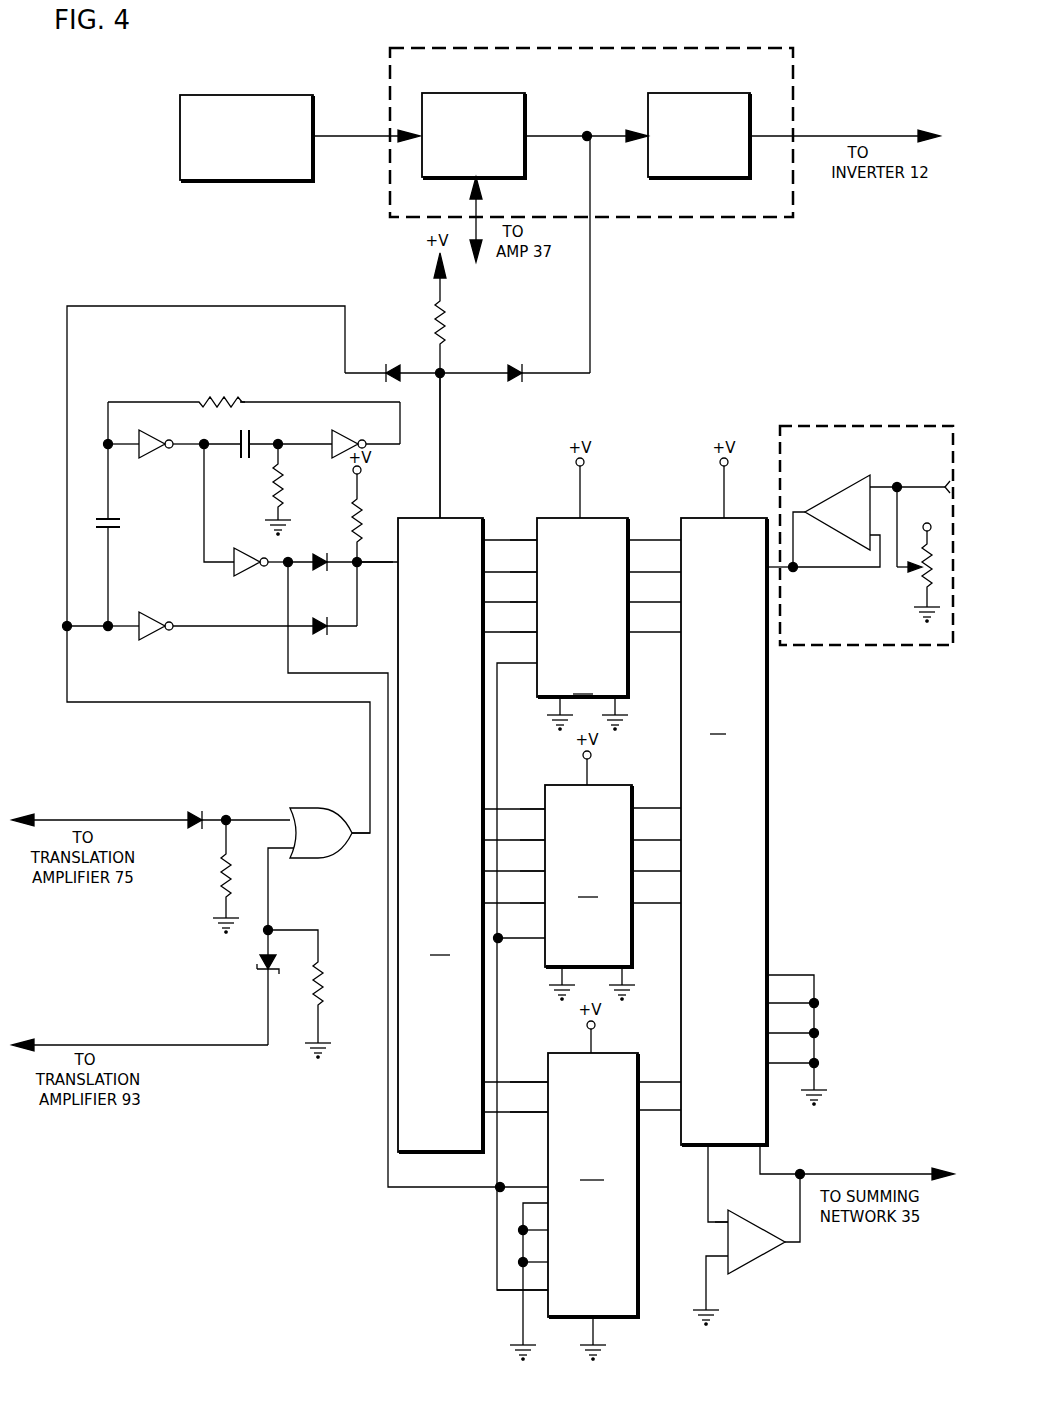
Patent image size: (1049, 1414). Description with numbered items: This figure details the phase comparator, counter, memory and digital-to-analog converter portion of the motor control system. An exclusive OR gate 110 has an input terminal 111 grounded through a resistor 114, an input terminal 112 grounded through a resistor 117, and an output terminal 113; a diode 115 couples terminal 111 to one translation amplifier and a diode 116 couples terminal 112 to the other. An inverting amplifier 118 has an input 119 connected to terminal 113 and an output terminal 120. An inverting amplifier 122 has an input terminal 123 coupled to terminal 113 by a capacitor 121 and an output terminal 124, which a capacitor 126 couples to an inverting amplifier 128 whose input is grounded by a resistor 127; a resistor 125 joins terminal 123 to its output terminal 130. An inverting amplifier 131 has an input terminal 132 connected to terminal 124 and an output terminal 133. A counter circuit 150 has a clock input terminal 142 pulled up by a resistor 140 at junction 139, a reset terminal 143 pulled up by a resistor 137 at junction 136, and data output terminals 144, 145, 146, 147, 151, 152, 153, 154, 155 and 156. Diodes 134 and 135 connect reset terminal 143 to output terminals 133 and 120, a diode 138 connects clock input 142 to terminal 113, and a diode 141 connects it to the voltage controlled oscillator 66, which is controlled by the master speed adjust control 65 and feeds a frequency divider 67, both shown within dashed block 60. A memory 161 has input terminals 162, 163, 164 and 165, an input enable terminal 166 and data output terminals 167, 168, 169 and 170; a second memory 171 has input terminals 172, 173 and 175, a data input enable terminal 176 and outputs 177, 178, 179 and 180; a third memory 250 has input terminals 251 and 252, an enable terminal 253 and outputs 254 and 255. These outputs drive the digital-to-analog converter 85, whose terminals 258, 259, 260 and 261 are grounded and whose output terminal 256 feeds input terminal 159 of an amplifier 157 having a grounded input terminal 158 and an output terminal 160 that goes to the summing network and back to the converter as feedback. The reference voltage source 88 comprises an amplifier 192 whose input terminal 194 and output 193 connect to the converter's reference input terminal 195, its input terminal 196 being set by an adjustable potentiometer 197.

The clock frequency source 60 is at (480, 47).
The master speed adjust control 65 is at (238, 93).
The voltage controlled oscillator 66 is at (522, 93).
The frequency divider 67 is at (738, 93).
The digital-to-analog converter 85 is at (724, 831).
The digital-to-analog converter reference voltage source 88 is at (866, 561).
The exclusive OR gate 110 is at (318, 806).
The input terminal 111 is at (245, 815).
The input terminal 112 is at (278, 855).
The output terminal 113 is at (362, 838).
The resistor 114 is at (220, 880).
The diode 115 is at (190, 812).
The diode 116 is at (258, 965).
The resistor 117 is at (325, 965).
The inverting amplifier 118 is at (156, 634).
The input 119 is at (125, 620).
The output terminal 120 is at (168, 620).
The capacitor 121 is at (122, 522).
The inverting amplifier 122 is at (152, 432).
The input terminal 123 is at (104, 445).
The output terminal 124 is at (168, 450).
The resistor 125 is at (217, 400).
The capacitor 126 is at (252, 430).
The resistor 127 is at (274, 488).
The inverting amplifier 128 is at (345, 431).
The output terminal 130 is at (367, 448).
The inverting amplifier 131 is at (238, 572).
The input terminal 132 is at (210, 555).
The output terminal 133 is at (266, 568).
The diode 134 is at (320, 553).
The diode 135 is at (321, 635).
The junction 136 is at (361, 568).
The resistor 137 is at (353, 510).
The diode 138 is at (391, 366).
The junction 139 is at (443, 378).
The resistor 140 is at (447, 325).
The diode 141 is at (518, 366).
The clock input terminal 142 is at (443, 518).
The reset terminal 143 is at (393, 556).
The data output terminal 144 is at (480, 542).
The data output terminal 145 is at (480, 574).
The data output terminal 146 is at (480, 604).
The data output terminal 147 is at (480, 634).
The counter circuit 150 is at (440, 835).
The data output terminal 151 is at (481, 806).
The data output terminal 152 is at (481, 837).
The data output terminal 153 is at (481, 868).
The data output terminal 154 is at (481, 900).
The data output terminal 155 is at (481, 1079).
The data output terminal 156 is at (481, 1110).
The amplifier 157 is at (768, 1262).
The input terminal 158 is at (728, 1270).
The input terminal 159 is at (732, 1215).
The output terminal 160 is at (800, 1246).
The memory 161 is at (582, 624).
The input terminal 162 is at (541, 542).
The input terminal 163 is at (541, 574).
The input terminal 164 is at (541, 604).
The input terminal 165 is at (541, 634).
The input enable terminal 166 is at (533, 665).
The data output terminal 167 is at (640, 542).
The data output terminal 168 is at (640, 574).
The data output terminal 169 is at (640, 604).
The data output terminal 170 is at (640, 634).
The second memory 171 is at (590, 892).
The input terminal 172 is at (543, 807).
The input terminal 173 is at (543, 838).
The input terminal 175 is at (543, 869).
The data input enable terminal 176 is at (543, 901).
The data output terminal 177 is at (640, 806).
The data output terminal 178 is at (640, 838).
The data output terminal 179 is at (640, 869).
The data output terminal 180 is at (640, 901).
The amplifier 192 is at (843, 485).
The amplifier output 193 is at (803, 508).
The input terminal 194 is at (882, 555).
The reference input terminal 195 is at (790, 572).
The input terminal 196 is at (898, 482).
The adjustable potentiometer 197 is at (918, 572).
The third memory 250 is at (574, 1206).
The input terminal 251 is at (545, 1078).
The input terminal 252 is at (550, 1110).
The data input enable terminal 253 is at (550, 1288).
The data output terminal 254 is at (642, 1080).
The data output terminal 255 is at (642, 1112).
The output terminal 256 is at (707, 1148).
The terminal 258 is at (775, 970).
The terminal 259 is at (775, 1000).
The terminal 260 is at (775, 1030).
The terminal 261 is at (775, 1060).